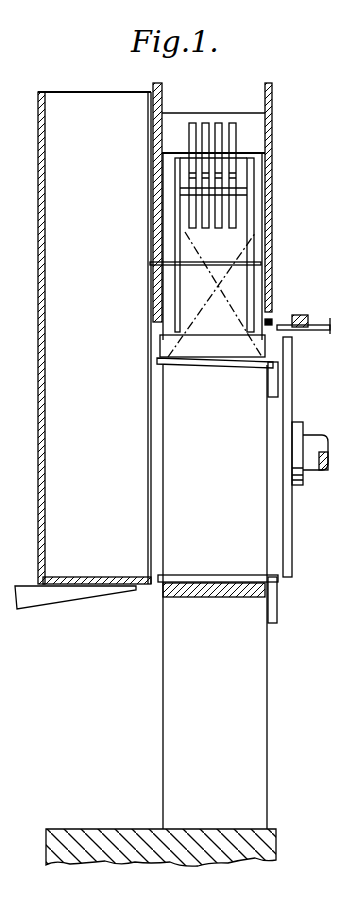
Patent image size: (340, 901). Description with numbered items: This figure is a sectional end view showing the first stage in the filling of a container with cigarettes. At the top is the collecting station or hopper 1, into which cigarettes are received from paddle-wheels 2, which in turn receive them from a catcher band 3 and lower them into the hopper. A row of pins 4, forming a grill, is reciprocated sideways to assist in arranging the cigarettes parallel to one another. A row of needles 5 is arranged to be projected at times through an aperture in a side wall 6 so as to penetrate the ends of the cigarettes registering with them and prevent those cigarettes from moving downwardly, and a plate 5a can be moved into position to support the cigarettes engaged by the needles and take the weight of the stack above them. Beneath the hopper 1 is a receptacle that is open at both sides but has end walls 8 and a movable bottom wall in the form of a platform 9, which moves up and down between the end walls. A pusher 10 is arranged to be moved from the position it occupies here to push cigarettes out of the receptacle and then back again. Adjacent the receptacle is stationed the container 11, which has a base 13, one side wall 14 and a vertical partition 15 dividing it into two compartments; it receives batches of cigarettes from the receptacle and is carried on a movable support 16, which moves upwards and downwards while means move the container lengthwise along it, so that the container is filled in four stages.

The hopper 1 is at (234, 241).
The paddle-wheels 2 is at (220, 137).
The catcher band 3 is at (182, 123).
The pins 4 is at (190, 266).
The needles 5 is at (281, 315).
The plate 5a is at (304, 340).
The side wall 6 is at (272, 246).
The end walls 8 is at (255, 390).
The platform 9 is at (207, 356).
The pusher 10 is at (287, 415).
The container 11 is at (56, 366).
The base 13 is at (86, 576).
The side wall 14 is at (46, 313).
The vertical partition 15 is at (88, 105).
The movable support 16 is at (95, 590).